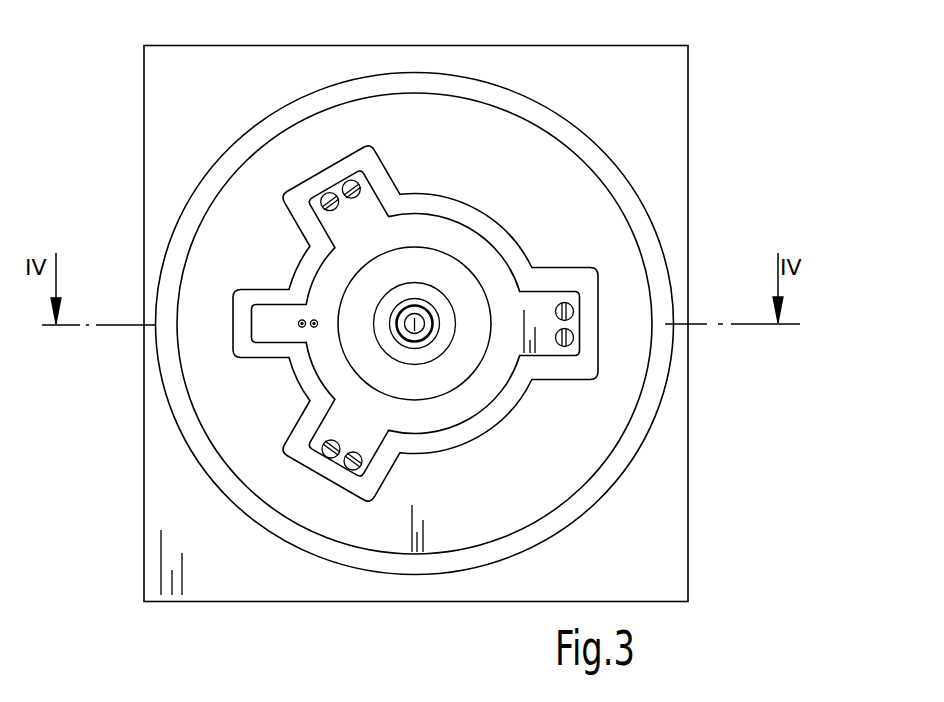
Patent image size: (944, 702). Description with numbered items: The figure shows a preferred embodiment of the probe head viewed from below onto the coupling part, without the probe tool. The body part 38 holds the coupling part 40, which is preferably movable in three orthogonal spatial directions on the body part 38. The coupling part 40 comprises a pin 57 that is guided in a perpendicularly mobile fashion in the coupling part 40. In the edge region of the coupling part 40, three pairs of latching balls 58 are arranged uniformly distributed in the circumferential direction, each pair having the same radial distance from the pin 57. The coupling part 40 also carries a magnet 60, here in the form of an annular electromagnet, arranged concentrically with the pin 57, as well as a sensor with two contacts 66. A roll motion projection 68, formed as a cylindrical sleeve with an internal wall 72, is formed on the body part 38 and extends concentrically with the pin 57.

The body part 38 is at (667, 82).
The coupling part 40 is at (500, 268).
The pin 57 is at (428, 335).
The latching balls 58 is at (575, 338).
The magnet 60 is at (425, 260).
The contacts 66 is at (302, 328).
The roll motion projection 68 is at (628, 203).
The internal wall 72 is at (524, 127).